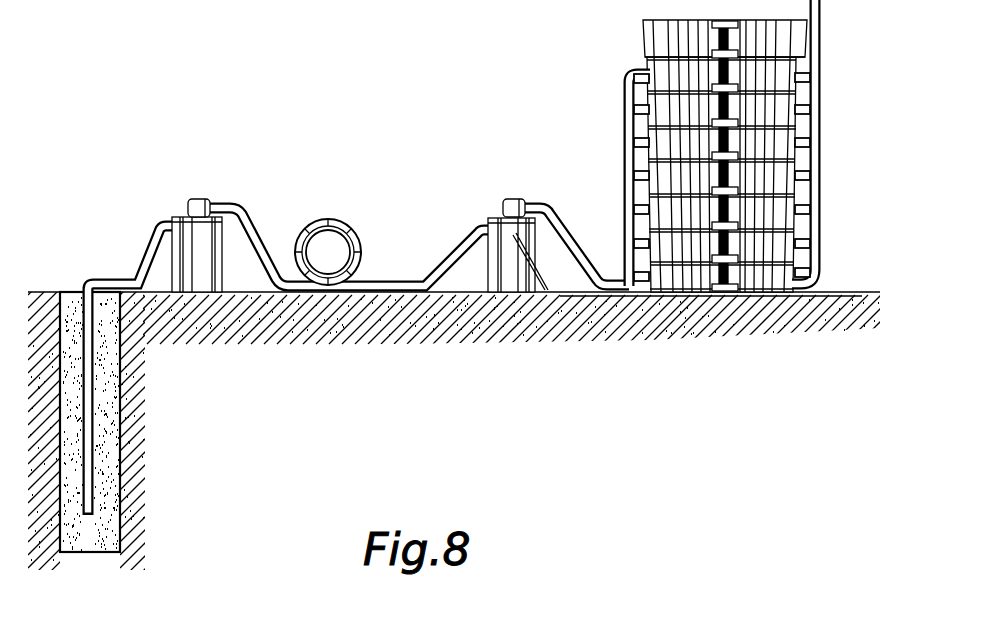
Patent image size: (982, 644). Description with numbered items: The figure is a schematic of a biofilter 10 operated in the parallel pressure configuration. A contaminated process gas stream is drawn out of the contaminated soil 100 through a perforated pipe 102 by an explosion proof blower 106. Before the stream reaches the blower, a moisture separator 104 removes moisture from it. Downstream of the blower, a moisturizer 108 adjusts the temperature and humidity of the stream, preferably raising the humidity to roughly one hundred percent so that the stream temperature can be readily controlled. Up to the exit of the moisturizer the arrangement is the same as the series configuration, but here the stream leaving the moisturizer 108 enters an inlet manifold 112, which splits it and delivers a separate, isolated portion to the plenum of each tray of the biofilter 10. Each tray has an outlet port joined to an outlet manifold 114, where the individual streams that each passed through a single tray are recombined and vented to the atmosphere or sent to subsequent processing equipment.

The biofilter 10 is at (822, 128).
The contaminated soil 100 is at (120, 482).
The perforated pipe 102 is at (118, 368).
The moisture separator 104 is at (226, 232).
The explosion proof blower 106 is at (336, 218).
The moisturizer 108 is at (490, 218).
The inlet manifold 112 is at (622, 127).
The outlet manifold 114 is at (818, 88).